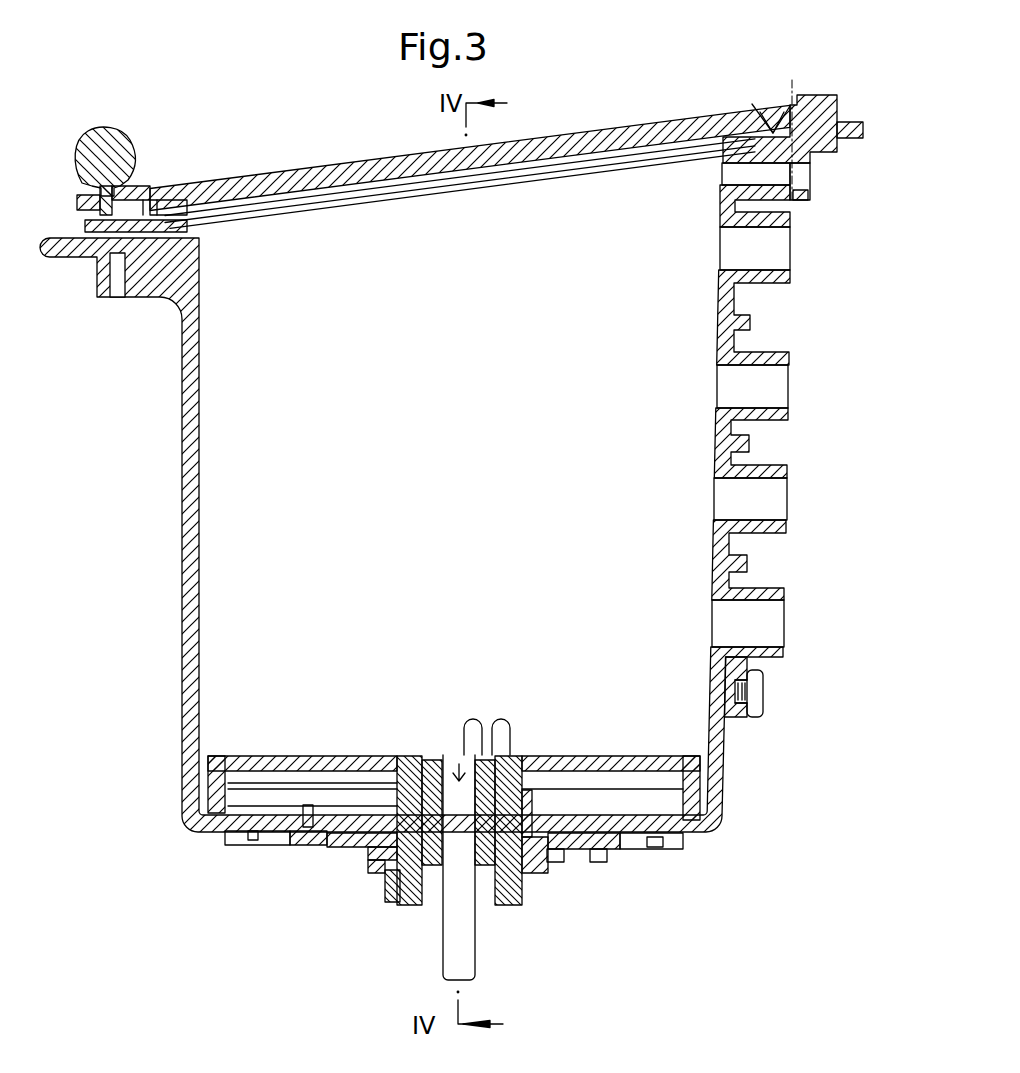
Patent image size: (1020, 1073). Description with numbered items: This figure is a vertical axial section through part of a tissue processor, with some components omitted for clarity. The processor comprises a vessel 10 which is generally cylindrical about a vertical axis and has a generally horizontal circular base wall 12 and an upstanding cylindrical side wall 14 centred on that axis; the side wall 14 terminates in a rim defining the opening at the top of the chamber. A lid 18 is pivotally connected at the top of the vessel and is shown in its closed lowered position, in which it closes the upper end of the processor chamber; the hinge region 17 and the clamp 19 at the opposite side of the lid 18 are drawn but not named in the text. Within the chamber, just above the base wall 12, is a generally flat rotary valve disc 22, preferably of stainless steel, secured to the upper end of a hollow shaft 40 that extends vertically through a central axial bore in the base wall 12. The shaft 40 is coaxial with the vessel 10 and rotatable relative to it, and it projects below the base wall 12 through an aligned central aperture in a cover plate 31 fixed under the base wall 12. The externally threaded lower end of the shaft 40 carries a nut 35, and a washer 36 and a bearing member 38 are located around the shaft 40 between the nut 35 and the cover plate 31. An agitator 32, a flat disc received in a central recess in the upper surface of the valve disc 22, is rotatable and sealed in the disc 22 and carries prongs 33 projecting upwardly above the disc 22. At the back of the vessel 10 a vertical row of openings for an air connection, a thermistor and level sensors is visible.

The vessel 10 is at (775, 322).
The base wall 12 is at (642, 838).
The side wall 14 is at (181, 477).
The hinge 17 is at (826, 82).
The lid 18 is at (313, 170).
The clamp 19 is at (54, 206).
The rotary valve disc 22 is at (285, 755).
The cover plate 31 is at (584, 857).
The agitator 32 is at (522, 753).
The prongs 33 is at (500, 721).
The nut 35 is at (388, 886).
The washer 36 is at (366, 864).
The bearing member 38 is at (367, 851).
The hollow shaft 40 is at (380, 788).